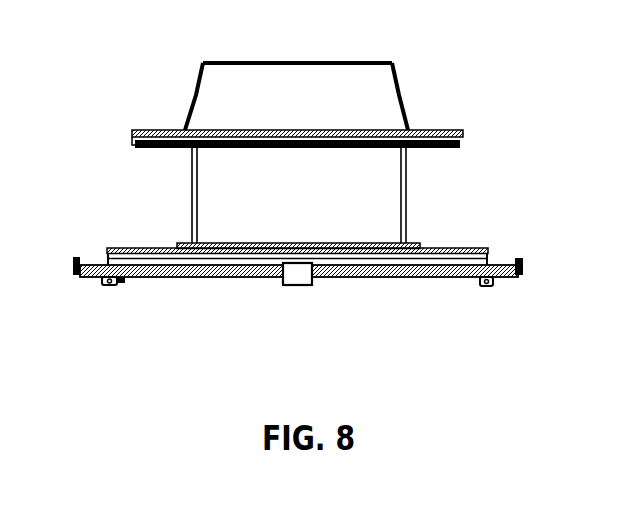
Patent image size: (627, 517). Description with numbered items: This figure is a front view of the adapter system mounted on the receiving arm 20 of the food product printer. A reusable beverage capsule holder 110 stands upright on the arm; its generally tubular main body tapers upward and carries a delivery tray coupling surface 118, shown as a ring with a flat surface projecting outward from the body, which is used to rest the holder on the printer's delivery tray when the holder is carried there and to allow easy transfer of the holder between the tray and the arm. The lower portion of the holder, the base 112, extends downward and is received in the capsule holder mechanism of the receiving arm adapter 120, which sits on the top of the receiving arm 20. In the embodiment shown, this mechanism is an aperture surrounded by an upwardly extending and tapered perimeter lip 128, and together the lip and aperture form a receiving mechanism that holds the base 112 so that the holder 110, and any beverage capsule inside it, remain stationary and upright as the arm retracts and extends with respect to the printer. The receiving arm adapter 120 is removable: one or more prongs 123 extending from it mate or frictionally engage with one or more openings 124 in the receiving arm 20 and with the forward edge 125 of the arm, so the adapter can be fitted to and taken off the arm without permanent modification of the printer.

The beverage capsule holder 110 is at (433, 90).
The delivery tray coupling surface 118 is at (453, 132).
The base 112 is at (192, 233).
The perimeter lip 128 is at (422, 242).
The receiving arm adapter 120 is at (498, 265).
The receiving arm 20 is at (400, 290).
The forward edge 125 is at (320, 289).
The prong 123 is at (105, 287).
The opening 124 is at (123, 285).